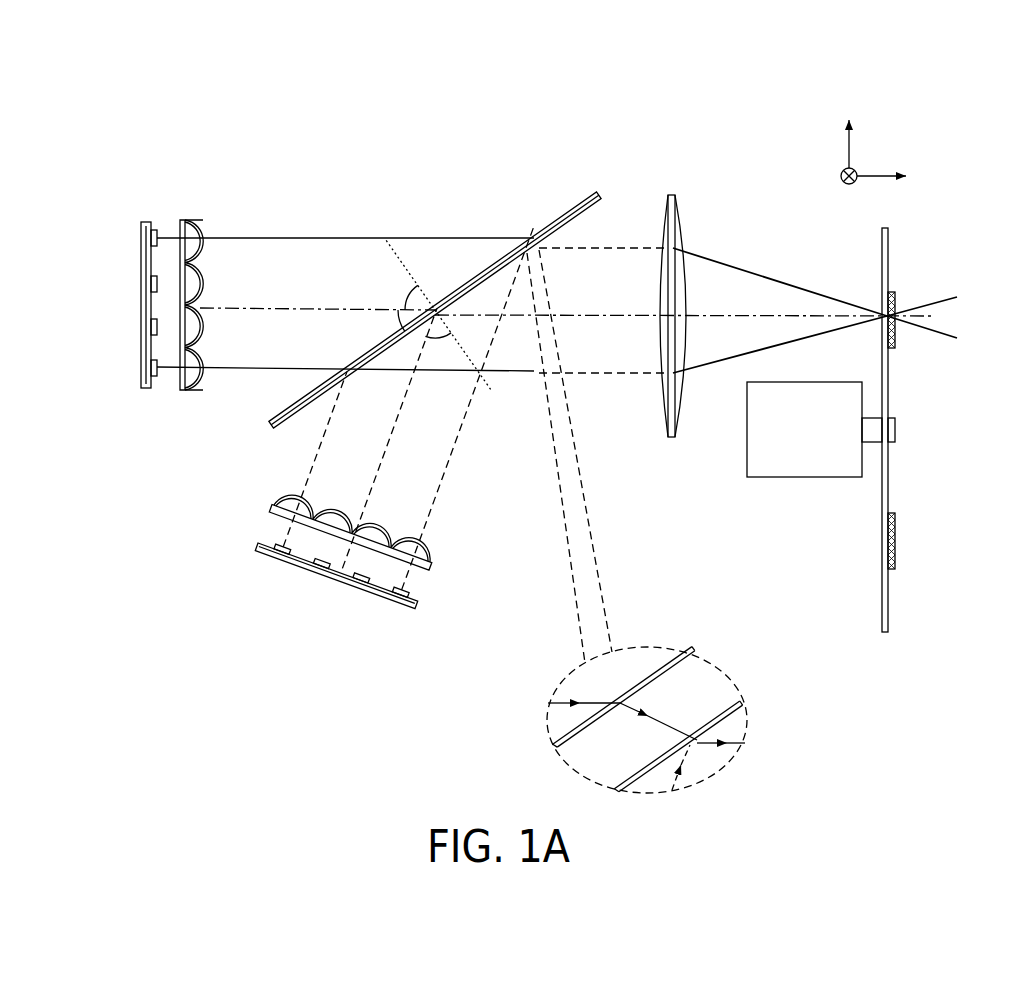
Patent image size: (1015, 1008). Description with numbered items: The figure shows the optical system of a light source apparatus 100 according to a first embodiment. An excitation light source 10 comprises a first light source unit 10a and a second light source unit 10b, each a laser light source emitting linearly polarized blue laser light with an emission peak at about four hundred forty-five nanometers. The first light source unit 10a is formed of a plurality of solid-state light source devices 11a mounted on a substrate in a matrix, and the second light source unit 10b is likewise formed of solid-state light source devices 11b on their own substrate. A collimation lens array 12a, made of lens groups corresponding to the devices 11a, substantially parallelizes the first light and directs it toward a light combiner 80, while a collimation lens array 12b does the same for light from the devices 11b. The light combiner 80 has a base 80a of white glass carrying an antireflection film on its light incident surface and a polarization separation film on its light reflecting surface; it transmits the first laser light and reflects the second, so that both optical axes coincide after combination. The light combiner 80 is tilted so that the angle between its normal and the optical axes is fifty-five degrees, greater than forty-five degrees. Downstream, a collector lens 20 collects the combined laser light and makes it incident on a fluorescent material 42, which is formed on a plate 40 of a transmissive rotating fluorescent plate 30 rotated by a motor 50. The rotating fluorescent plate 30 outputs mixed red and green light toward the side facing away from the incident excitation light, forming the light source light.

The light source apparatus 100 is at (380, 140).
The excitation light source 10 is at (262, 150).
The first light source unit 10a is at (201, 299).
The second light source unit 10b is at (334, 552).
The solid-state light source devices 11a is at (158, 340).
The solid-state light source devices 11b is at (367, 575).
The collimation lens array 12a is at (221, 288).
The collimation lens array 12b is at (346, 516).
The collector lens 20 is at (684, 236).
The rotating fluorescent plate 30 is at (936, 430).
The plate 40 is at (888, 258).
The fluorescent material 42 is at (898, 296).
The motor 50 is at (783, 466).
The light combiner 80 is at (528, 205).
The base 80a is at (545, 227).